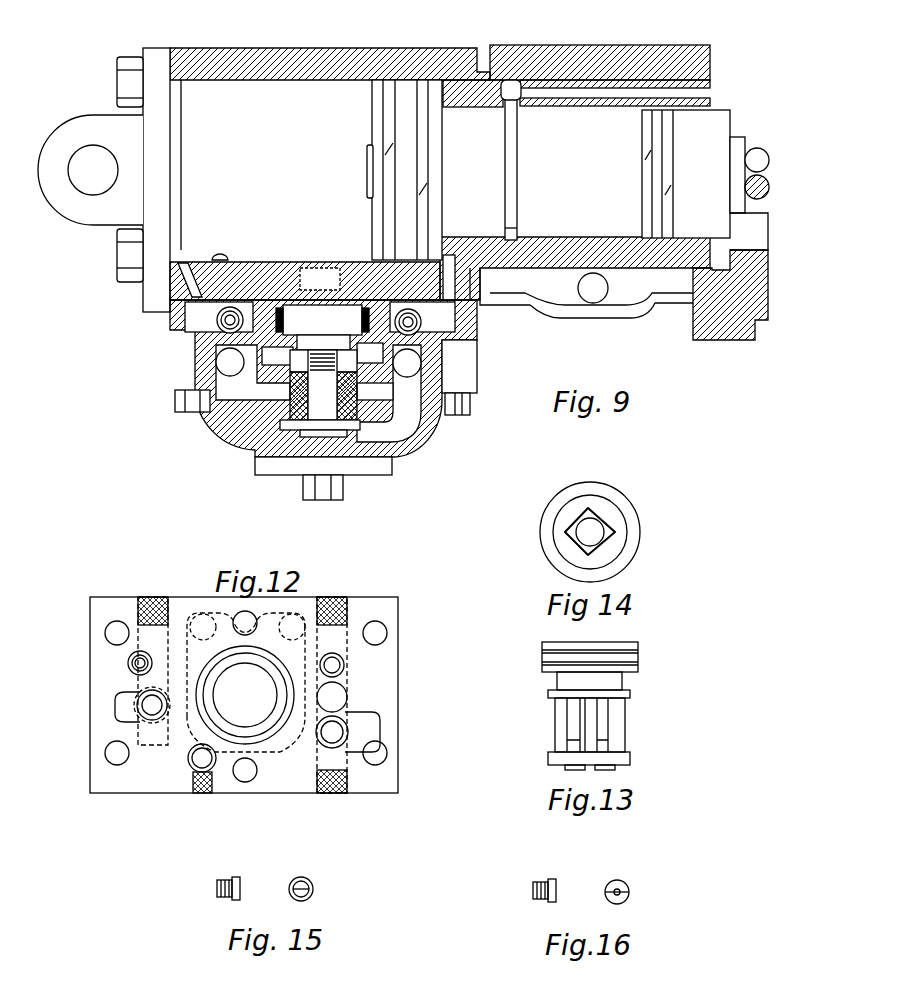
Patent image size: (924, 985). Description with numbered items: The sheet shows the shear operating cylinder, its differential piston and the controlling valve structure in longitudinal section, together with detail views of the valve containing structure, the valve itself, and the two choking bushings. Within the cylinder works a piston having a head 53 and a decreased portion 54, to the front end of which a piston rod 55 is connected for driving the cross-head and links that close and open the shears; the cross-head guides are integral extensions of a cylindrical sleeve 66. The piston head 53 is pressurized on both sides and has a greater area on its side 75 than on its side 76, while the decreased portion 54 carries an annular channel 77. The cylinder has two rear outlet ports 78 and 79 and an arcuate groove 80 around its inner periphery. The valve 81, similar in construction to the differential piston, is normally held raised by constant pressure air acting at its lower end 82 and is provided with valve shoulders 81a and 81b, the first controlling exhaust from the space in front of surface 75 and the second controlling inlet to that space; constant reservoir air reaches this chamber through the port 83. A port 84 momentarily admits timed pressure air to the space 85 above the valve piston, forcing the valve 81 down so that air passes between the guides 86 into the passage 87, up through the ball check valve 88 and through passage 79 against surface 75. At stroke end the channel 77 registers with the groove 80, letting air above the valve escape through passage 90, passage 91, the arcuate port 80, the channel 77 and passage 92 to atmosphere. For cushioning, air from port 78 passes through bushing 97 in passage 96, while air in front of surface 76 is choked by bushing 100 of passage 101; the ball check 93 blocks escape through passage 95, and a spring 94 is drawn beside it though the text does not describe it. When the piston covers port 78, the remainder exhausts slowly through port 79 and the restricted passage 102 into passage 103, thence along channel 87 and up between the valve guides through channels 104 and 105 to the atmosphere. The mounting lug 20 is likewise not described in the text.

In FIG. 9, the mounting lug 20 is at (73, 202).
In FIG. 9, the piston head 53 is at (405, 90).
In FIG. 9, the cylindrical sleeve 66 is at (590, 55).
In FIG. 9, the decreased portion of the piston 54 is at (708, 142).
In FIG. 9, the piston rod 55 is at (753, 157).
In FIG. 9, the larger piston surface 75 is at (375, 117).
In FIG. 9, the smaller piston surface 76 is at (445, 88).
In FIG. 9, the exhaust passage 92 is at (592, 90).
In FIG. 9, the annular channel 77 is at (514, 173).
In FIG. 9, the outlet port 79 is at (184, 264).
In FIG. 9, the outlet port 78 is at (222, 252).
In FIG. 9, the space above the valve piston 85 is at (298, 320).
In FIG. 9, the passage 90 is at (370, 277).
In FIG. 9, the passage 95 is at (447, 262).
In FIG. 9, the passage 91 is at (498, 250).
In FIG. 9, the ball check valve 88 is at (218, 327).
In FIG. 9, the passage 103 is at (222, 365).
In FIG. 12, the passage 103 is at (147, 637).
In FIG. 9, the passage 87 is at (235, 395).
In FIG. 9, the channel 104 is at (252, 383).
In FIG. 9, the lower end of the valve 82 is at (305, 435).
In FIG. 9, the valve 81 is at (347, 420).
In FIG. 12, the valve 81 is at (262, 737).
In FIG. 14, the valve 81 is at (632, 542).
In FIG. 13, the valve 81 is at (615, 681).
In FIG. 9, the arcuate groove 80 is at (515, 268).
In FIG. 9, the spring 94 is at (433, 306).
In FIG. 12, the spring 94 is at (360, 732).
In FIG. 9, the ball check 93 is at (445, 345).
In FIG. 9, the port 83 is at (410, 364).
In FIG. 12, the port 83 is at (332, 793).
In FIG. 12, the channel 105 is at (200, 623).
In FIG. 12, the passage 96 is at (140, 663).
In FIG. 12, the passage 101 is at (340, 665).
In FIG. 12, the passage 102 is at (152, 725).
In FIG. 12, the port 84 is at (205, 792).
In FIG. 13, the valve shoulder 81a is at (553, 697).
In FIG. 13, the valve shoulder 81b is at (553, 755).
In FIG. 13, the guides 86 is at (622, 728).
In FIG. 15, the bushing 97 is at (290, 880).
In FIG. 16, the bushing 100 is at (610, 883).